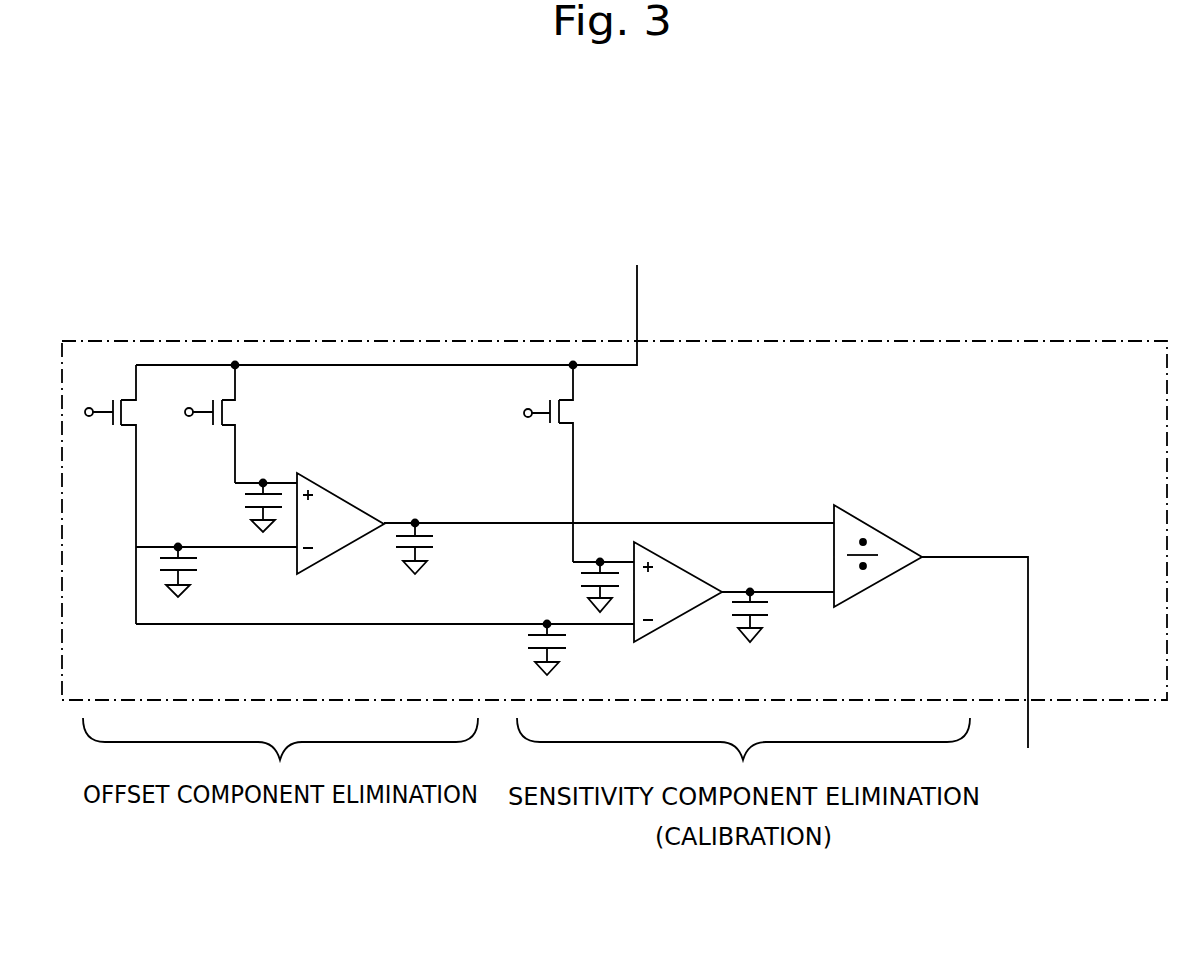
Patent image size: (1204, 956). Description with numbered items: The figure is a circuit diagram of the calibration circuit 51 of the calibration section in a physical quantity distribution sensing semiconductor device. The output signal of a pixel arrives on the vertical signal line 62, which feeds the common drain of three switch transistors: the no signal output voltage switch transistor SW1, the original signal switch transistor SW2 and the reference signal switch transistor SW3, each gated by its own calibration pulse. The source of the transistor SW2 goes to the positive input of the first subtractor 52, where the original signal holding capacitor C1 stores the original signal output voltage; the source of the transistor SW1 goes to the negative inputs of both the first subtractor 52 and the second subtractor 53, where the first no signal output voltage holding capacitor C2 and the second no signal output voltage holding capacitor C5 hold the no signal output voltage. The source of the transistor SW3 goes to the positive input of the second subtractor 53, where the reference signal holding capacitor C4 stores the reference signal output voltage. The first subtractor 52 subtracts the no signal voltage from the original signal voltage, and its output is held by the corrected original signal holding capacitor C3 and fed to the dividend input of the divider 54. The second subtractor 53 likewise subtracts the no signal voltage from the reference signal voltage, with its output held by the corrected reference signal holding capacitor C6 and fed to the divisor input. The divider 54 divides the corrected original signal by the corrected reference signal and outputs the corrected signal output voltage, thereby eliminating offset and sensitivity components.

The calibration circuit 51 is at (857, 341).
The vertical signal line 62 is at (637, 300).
The first subtractor 52 is at (340, 495).
The second subtractor 53 is at (690, 612).
The divider 54 is at (852, 515).
The no signal output voltage switch transistor SW1 is at (127, 410).
The original signal switch transistor SW2 is at (237, 410).
The reference signal switch transistor SW3 is at (567, 408).
The original signal holding capacitor C1 is at (243, 503).
The first no signal output voltage holding capacitor C2 is at (192, 572).
The corrected original signal holding capacitor C3 is at (437, 548).
The reference signal holding capacitor C4 is at (578, 583).
The second no signal output voltage holding capacitor C5 is at (528, 646).
The corrected reference signal holding capacitor C6 is at (770, 620).